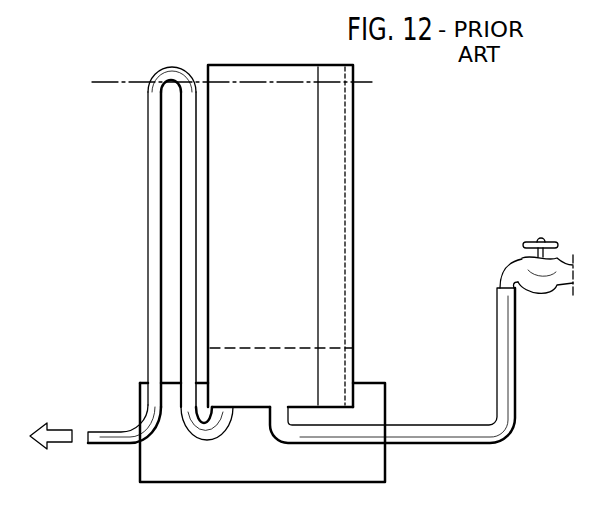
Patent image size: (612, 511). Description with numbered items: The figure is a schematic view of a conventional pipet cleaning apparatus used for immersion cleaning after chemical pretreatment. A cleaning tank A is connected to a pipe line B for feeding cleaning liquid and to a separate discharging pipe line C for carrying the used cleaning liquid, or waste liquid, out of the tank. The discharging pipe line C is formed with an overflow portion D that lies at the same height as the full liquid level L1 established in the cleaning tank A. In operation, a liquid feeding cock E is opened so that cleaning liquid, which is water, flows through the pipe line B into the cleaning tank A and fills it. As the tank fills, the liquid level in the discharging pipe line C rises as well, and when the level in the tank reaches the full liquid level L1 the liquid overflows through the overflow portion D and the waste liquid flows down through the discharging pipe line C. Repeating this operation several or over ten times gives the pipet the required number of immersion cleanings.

The cleaning tank A is at (353, 177).
The pipe line for feeding cleaning liquid B is at (452, 424).
The discharging pipe line C is at (131, 238).
The overflow portion D is at (176, 69).
The liquid feeding cock E is at (530, 240).
The full liquid level L1 is at (219, 83).